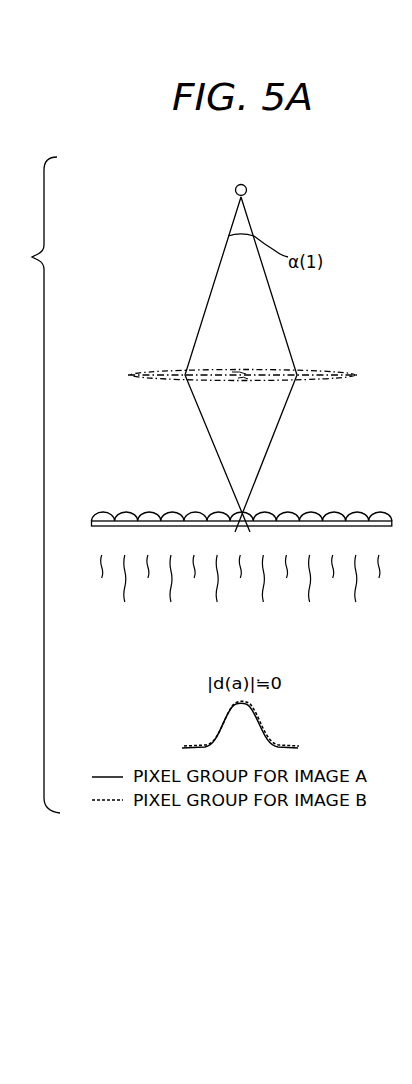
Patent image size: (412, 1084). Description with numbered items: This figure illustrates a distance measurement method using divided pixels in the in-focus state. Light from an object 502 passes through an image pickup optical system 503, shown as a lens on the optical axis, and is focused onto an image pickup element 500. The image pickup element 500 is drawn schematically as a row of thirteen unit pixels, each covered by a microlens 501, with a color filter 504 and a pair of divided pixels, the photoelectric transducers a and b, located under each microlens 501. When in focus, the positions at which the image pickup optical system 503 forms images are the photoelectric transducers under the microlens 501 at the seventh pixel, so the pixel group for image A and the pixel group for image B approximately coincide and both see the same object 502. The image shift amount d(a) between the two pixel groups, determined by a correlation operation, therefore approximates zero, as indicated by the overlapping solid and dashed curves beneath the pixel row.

The image pickup element 500 is at (288, 511).
The microlens 501 is at (105, 512).
The object 502 is at (247, 186).
The image pickup optical system 503 is at (308, 363).
The color filter 504 is at (92, 527).